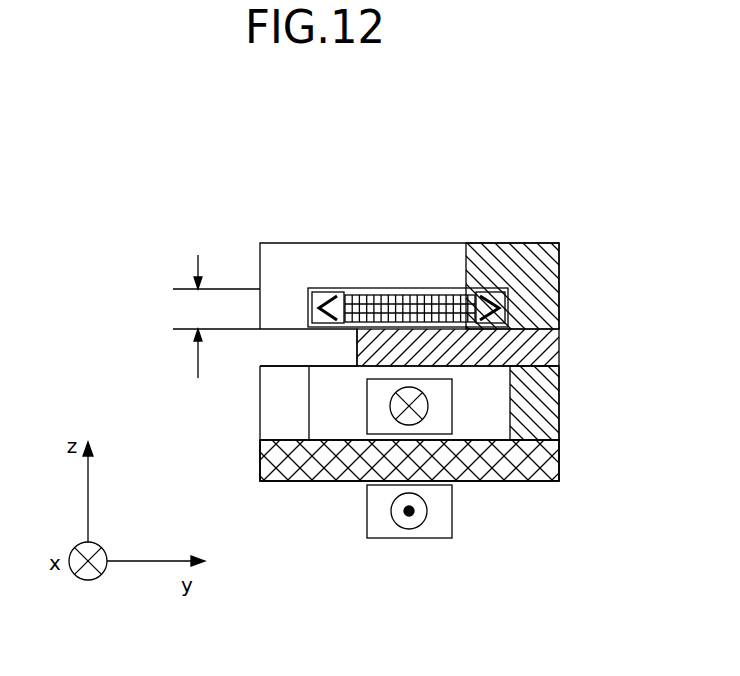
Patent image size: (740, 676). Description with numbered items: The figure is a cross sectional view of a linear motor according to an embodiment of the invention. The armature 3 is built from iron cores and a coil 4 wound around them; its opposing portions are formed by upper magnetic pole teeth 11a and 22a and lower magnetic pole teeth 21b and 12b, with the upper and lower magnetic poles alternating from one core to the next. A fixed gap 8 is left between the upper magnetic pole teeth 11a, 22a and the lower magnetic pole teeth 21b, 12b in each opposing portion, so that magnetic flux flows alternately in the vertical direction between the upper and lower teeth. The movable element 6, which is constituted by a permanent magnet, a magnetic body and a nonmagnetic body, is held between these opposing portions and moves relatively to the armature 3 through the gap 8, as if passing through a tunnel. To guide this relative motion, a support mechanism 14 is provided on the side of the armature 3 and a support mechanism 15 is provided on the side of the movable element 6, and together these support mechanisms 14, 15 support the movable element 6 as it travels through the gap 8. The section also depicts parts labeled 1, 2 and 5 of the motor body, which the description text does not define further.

The housing 1 is at (283, 418).
The yoke 2 is at (537, 409).
The armature 3 is at (563, 460).
The coil 4 is at (379, 524).
The base plate 5 is at (322, 462).
The movable element 6 is at (420, 302).
The gap 8 is at (216, 316).
The upper magnetic pole teeth 11a is at (361, 258).
The lower magnetic pole teeth 12b is at (281, 353).
The support mechanism 14 is at (322, 296).
The support mechanism 15 is at (331, 293).
The lower magnetic pole teeth 21b is at (520, 345).
The upper magnetic pole teeth 22a is at (490, 268).